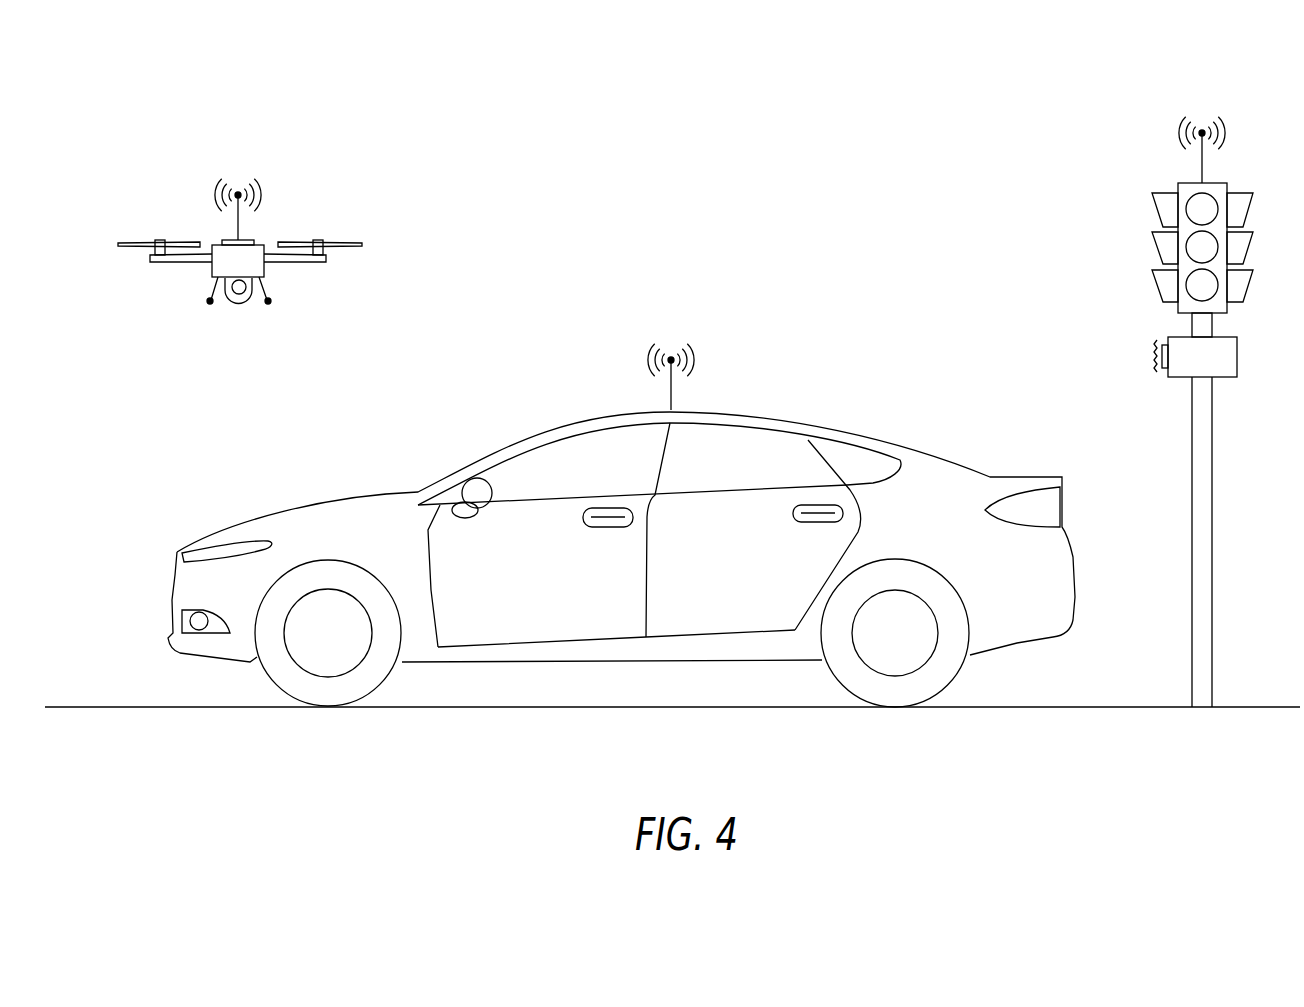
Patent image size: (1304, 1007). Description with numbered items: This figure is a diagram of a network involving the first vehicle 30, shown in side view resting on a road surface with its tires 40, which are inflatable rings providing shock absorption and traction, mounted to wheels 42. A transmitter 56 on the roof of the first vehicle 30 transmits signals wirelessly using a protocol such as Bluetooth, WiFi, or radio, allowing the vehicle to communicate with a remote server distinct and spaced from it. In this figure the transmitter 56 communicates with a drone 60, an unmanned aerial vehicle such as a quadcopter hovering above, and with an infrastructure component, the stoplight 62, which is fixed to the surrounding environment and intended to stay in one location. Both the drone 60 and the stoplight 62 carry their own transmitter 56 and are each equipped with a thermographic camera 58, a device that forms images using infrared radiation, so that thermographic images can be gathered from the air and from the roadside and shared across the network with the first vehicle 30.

The first vehicle 30 is at (799, 407).
The tire 40 is at (282, 690).
The wheel 42 is at (330, 680).
The transmitter 56 is at (672, 356).
The thermographic camera 58 is at (243, 297).
The drone 60 is at (262, 247).
The stoplight 62 is at (1226, 181).